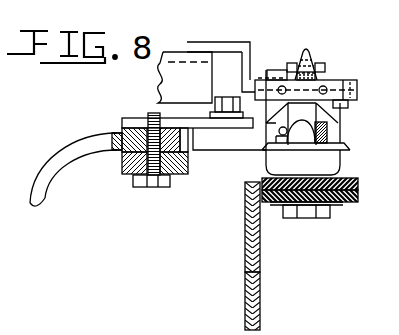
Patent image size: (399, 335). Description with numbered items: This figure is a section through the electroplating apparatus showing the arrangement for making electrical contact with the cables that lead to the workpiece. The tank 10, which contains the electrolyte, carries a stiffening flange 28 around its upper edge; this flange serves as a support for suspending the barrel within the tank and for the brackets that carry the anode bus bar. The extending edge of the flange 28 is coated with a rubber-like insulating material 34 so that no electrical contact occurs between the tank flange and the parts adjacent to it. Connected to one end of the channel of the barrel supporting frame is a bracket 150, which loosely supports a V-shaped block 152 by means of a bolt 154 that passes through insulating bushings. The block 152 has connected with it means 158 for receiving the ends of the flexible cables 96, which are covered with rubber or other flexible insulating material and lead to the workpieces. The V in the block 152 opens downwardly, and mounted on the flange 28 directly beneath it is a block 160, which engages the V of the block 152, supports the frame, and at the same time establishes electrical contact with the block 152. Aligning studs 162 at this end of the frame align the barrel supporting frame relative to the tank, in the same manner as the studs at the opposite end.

The tank 10 is at (254, 318).
The stiffening flange 28 is at (262, 252).
The rubber-like insulating material 34 is at (350, 198).
The flexible cables 96 is at (50, 158).
The bracket 150 is at (241, 43).
The V-shaped block 152 is at (338, 131).
The bolt 154 is at (320, 71).
The means for receiving the ends of the cables 158 is at (125, 177).
The block 160 is at (342, 158).
The aligning studs 162 is at (307, 52).